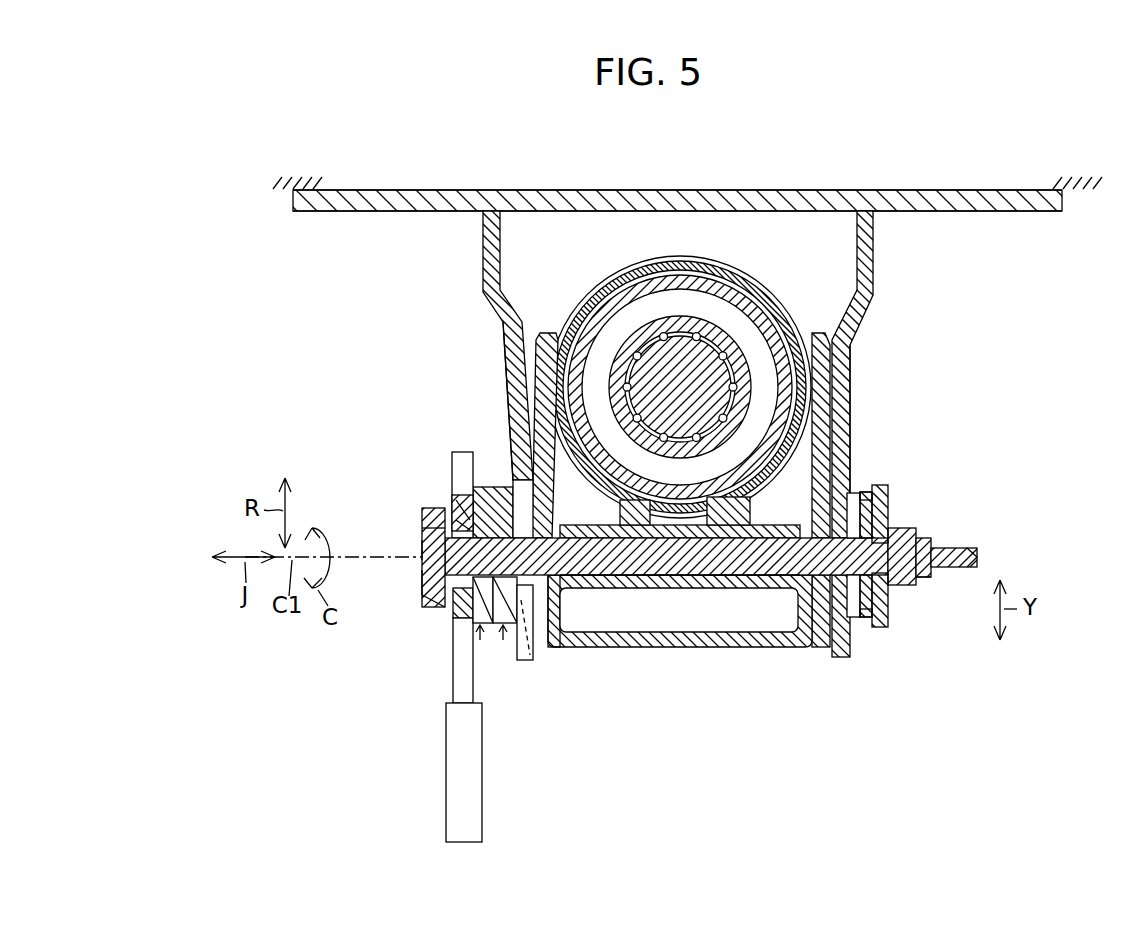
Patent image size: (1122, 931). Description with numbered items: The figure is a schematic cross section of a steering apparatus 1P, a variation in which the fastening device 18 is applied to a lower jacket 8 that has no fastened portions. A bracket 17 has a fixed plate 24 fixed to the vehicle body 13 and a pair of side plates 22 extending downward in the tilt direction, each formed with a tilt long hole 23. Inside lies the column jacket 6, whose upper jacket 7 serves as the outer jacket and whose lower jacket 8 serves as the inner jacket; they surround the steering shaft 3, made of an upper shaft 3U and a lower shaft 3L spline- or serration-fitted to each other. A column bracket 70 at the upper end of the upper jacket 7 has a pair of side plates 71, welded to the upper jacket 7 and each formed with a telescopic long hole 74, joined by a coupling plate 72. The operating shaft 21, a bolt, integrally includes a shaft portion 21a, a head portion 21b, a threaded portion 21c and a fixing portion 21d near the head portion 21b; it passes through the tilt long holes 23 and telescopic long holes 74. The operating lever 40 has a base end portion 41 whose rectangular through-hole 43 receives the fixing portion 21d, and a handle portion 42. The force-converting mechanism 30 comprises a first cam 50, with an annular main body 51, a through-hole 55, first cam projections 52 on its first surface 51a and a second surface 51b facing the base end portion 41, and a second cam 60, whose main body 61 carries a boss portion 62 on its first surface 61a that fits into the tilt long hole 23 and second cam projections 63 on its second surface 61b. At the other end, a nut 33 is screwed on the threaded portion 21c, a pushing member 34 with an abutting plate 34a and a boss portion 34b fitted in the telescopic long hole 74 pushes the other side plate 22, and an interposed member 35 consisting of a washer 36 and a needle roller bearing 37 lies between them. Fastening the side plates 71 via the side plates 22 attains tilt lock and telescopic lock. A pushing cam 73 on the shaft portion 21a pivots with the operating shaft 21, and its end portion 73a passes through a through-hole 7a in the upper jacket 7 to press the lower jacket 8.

The vehicle body 13 is at (299, 186).
The fixed plate 24 is at (735, 190).
The bracket 17 is at (830, 188).
The steering apparatus 1P is at (950, 172).
The side plates 22 is at (490, 254).
The tilt long hole 23 is at (512, 478).
The column jacket 6 is at (601, 433).
The upper jacket 7 is at (762, 292).
The lower jacket 8 is at (754, 312).
The steering shaft 3 is at (601, 440).
The upper shaft 3U is at (736, 357).
The lower shaft 3L is at (712, 383).
The side plates 71 is at (543, 386).
The first cam projections 52 is at (461, 456).
The main body 51 is at (466, 622).
The second cam projections 63 is at (493, 489).
The boss portion 62 is at (530, 508).
The first surface 51a is at (465, 496).
The second surface 51b is at (470, 503).
The operating shaft 21 is at (601, 447).
The head portion 21b is at (424, 516).
The fixing portion 21d is at (421, 530).
The shaft portion 21a is at (682, 578).
The threaded portion 21c is at (918, 540).
The through-hole 55 is at (421, 549).
The through-hole 43 is at (421, 583).
The fastening device 18 is at (428, 588).
The base end portion 41 is at (455, 607).
The column bracket 70 is at (561, 459).
The coupling plate 72 is at (742, 648).
The pushing cam 73 is at (648, 648).
The end portion 73a is at (630, 515).
The through-hole 7a is at (736, 512).
The telescopic long hole 74 is at (576, 590).
The force-converting mechanism 30 is at (424, 651).
The second cam 60 is at (461, 645).
The first cam 50 is at (470, 630).
The main body 61 is at (504, 645).
The first surface 61a is at (527, 600).
The second surface 61b is at (528, 662).
The operating lever 40 is at (454, 772).
The handle portion 42 is at (482, 796).
The pushing member 34 is at (895, 594).
The abutting plate 34a is at (866, 503).
The boss portion 34b is at (862, 521).
The interposed member 35 is at (894, 597).
The washer 36 is at (882, 612).
The needle roller bearing 37 is at (868, 622).
The nut 33 is at (920, 584).